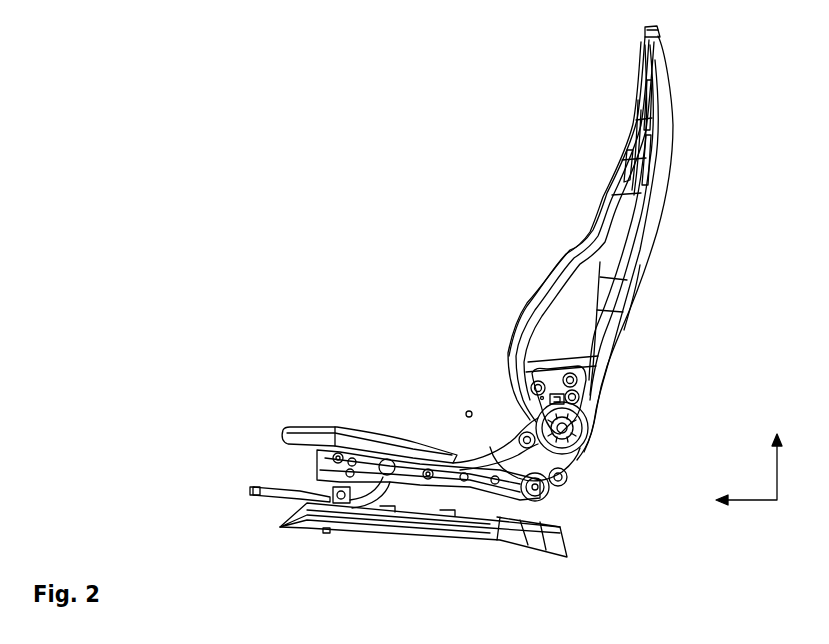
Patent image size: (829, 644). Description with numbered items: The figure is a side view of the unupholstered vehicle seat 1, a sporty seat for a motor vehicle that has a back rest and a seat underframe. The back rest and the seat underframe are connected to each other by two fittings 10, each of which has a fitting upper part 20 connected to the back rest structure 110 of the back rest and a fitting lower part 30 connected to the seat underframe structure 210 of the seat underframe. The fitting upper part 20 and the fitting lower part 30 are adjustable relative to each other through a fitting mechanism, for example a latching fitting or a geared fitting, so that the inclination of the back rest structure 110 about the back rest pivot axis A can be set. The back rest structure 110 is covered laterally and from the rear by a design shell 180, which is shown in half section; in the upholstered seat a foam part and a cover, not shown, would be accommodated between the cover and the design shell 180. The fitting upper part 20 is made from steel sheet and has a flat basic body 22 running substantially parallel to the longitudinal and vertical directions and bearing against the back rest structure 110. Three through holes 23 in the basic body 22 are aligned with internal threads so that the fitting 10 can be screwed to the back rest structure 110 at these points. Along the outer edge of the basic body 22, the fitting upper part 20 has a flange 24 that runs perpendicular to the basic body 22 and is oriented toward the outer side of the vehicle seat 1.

The vehicle seat 1 is at (367, 217).
The back rest structure 110 is at (663, 178).
The design shell 180 is at (582, 247).
The fitting upper part 20 is at (552, 372).
The basic body 22 is at (540, 384).
The through holes 23 is at (580, 382).
The flange 24 is at (581, 397).
The fitting 10 is at (572, 420).
The back rest pivot axis A is at (570, 436).
The fitting lower part 30 is at (538, 430).
The seat underframe structure 210 is at (544, 488).